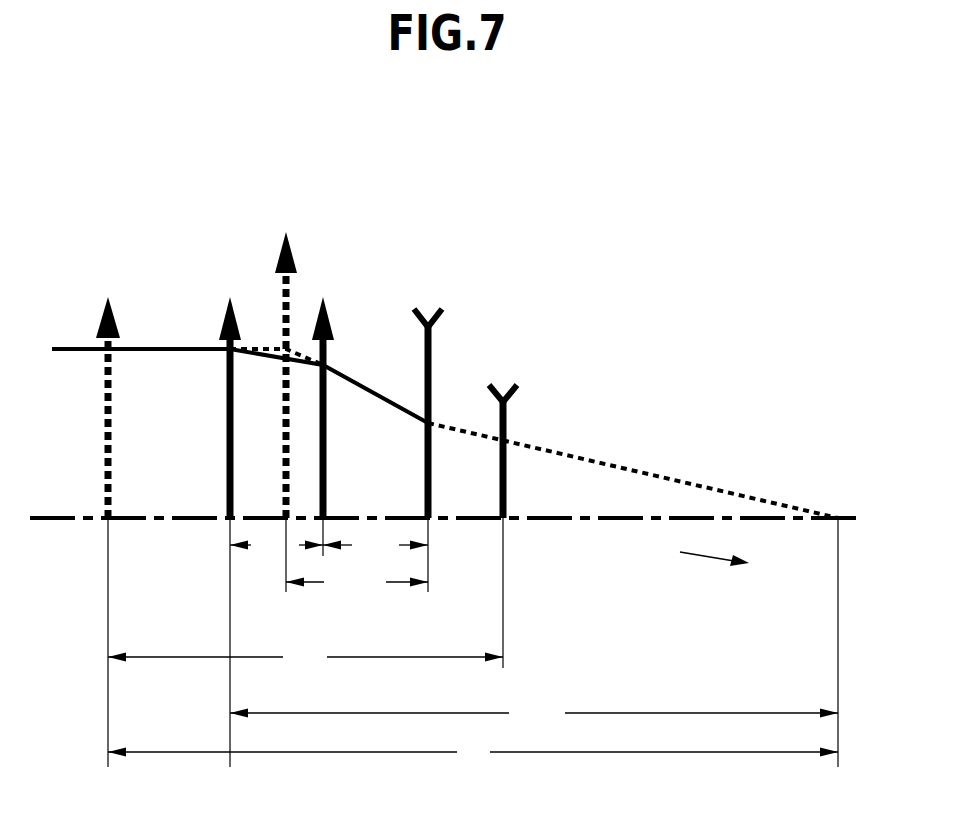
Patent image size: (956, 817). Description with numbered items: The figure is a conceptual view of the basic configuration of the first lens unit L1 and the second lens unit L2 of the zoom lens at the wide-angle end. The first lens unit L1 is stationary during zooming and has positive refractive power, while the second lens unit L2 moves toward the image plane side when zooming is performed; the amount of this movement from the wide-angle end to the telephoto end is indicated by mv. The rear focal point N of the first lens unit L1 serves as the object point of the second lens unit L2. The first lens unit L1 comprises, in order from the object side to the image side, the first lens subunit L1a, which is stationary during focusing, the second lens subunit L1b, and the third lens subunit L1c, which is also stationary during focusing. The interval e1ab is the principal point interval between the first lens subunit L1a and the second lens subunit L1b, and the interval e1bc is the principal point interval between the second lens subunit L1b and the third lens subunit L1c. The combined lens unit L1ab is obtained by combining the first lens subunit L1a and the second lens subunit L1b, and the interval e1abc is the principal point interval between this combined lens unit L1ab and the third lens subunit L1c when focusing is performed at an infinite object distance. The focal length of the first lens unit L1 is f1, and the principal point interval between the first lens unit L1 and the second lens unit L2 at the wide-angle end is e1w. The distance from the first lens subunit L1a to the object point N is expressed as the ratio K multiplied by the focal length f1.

The first lens unit L1 is at (107, 511).
The first lens subunit L1a is at (231, 516).
The lens unit L1ab is at (287, 396).
The second lens subunit L1b is at (325, 411).
The third lens subunit L1c is at (428, 432).
The second lens unit L2 is at (503, 503).
The rear focal point N is at (833, 620).
The amount of movement mv is at (512, 525).
The principal point interval between first and second lens subunits e1ab is at (276, 545).
The principal point interval between second and third lens subunits e1bc is at (375, 545).
The principal point interval between combined lens unit and third lens subunit e1abc is at (357, 582).
The principal point interval between first and second lens units e1w is at (305, 657).
The focal length of first lens unit f1 is at (473, 752).